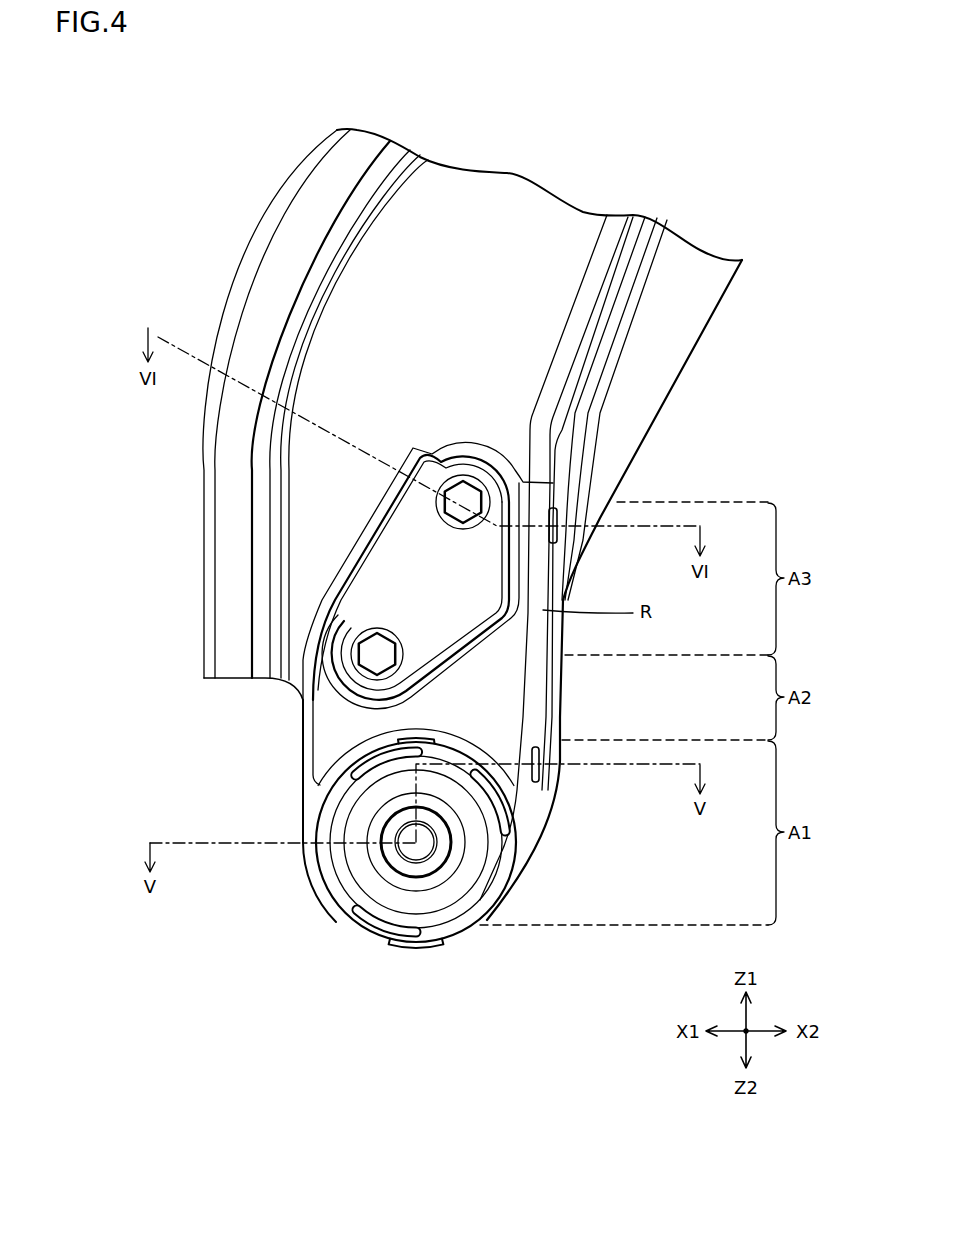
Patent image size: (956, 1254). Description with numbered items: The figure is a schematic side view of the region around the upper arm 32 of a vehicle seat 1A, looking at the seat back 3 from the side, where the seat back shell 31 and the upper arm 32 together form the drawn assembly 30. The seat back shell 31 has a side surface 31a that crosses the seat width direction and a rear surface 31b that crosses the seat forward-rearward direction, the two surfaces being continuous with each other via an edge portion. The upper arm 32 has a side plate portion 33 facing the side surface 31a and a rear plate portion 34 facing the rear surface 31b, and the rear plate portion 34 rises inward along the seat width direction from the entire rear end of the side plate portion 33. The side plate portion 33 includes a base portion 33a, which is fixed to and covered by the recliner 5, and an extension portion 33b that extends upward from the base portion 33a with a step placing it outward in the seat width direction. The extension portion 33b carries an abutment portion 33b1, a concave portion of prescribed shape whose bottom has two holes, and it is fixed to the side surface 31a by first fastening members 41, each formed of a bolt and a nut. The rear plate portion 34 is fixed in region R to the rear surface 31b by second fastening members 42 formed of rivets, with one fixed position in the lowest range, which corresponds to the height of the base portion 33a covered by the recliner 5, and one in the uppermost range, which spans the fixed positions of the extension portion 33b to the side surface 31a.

The motorcycle 1A is at (779, 65).
The swing arm unit 3 is at (269, 109).
The arm body 30 is at (416, 545).
The seat back shell 31 is at (503, 232).
The side surface 31a is at (383, 312).
The rear surface 31b is at (550, 462).
The upper arm 32 is at (665, 675).
The side plate portion 33 is at (480, 717).
The rear plate portion 34 is at (538, 683).
The base portion 33a is at (376, 880).
The extension portion 33b is at (338, 718).
The abutment portion 33b1 is at (430, 582).
The first fastening member 41 is at (455, 510).
The second fastening member 42 is at (557, 533).
The recliner 5 is at (456, 883).